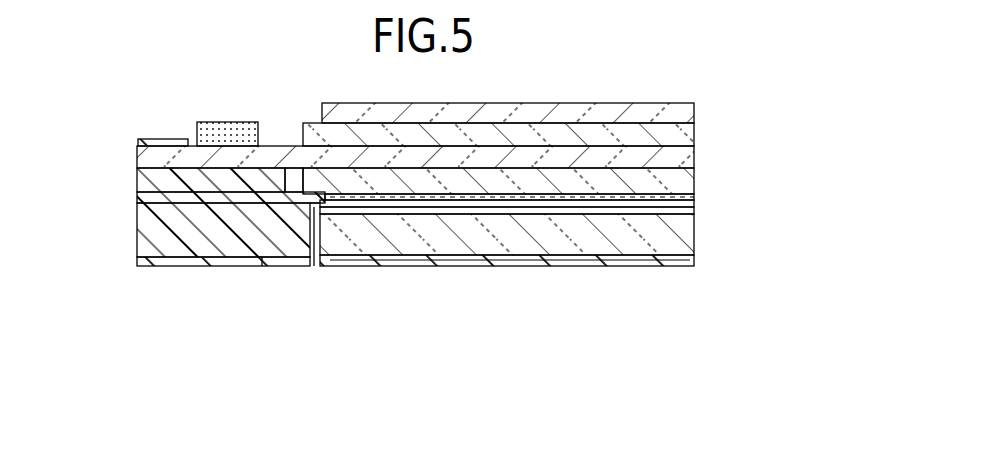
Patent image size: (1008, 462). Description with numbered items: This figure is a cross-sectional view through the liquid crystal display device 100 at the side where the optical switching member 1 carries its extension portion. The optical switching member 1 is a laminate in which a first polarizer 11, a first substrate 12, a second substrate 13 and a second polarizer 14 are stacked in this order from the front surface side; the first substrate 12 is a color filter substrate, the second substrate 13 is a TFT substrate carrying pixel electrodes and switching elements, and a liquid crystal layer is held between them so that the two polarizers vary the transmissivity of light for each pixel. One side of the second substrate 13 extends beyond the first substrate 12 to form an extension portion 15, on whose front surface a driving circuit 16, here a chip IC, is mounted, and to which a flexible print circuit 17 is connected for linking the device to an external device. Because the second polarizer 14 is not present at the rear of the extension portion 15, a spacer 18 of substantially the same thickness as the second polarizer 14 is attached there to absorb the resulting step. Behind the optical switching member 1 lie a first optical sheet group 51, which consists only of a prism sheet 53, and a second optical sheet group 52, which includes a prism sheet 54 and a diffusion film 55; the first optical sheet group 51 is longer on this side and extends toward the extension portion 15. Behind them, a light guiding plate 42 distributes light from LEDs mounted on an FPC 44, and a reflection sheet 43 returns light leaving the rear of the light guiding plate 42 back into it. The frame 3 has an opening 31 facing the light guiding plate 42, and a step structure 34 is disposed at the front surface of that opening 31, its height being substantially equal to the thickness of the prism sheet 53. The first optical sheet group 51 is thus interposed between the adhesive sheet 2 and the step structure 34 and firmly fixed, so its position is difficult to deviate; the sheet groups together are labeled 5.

The liquid crystal display device 100 is at (258, 358).
The optical switching member 1 is at (785, 80).
The first polarizer 11 is at (697, 112).
The first substrate 12 is at (697, 138).
The second substrate 13 is at (697, 160).
The second polarizer 14 is at (695, 183).
The extension portion 15 is at (284, 146).
The driving circuit 16 is at (230, 122).
The flexible print circuit 17 is at (173, 140).
The spacer 18 is at (137, 183).
The adhesive sheet 2 is at (137, 197).
The frame 3 is at (137, 235).
The opening 31 is at (313, 230).
The step structure 34 is at (275, 207).
The light guiding plate 42 is at (697, 238).
The reflection sheet 43 is at (622, 267).
The FPC 44 is at (197, 266).
The pressure sensor 5 is at (840, 190).
The first optical sheet group 51 is at (578, 204).
The second optical sheet group 52 is at (780, 218).
The prism sheet 53 is at (697, 199).
The prism sheet 54 is at (697, 207).
The diffusion film 55 is at (697, 213).